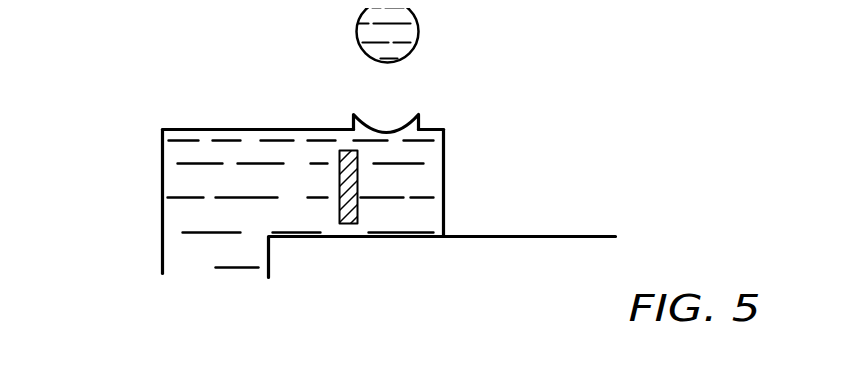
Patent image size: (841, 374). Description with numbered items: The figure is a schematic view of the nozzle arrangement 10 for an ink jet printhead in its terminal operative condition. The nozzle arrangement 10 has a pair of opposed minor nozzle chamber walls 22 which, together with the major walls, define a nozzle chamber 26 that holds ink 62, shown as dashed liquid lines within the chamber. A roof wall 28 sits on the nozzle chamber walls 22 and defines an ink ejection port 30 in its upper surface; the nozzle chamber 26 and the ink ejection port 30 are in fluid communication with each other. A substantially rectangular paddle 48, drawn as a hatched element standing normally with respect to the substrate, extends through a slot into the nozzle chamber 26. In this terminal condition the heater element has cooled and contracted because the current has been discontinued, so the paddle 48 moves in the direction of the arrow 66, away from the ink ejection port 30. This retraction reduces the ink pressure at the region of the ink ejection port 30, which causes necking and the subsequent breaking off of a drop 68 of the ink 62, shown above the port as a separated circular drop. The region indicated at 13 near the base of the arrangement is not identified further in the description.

The nozzle arrangement 10 is at (552, 108).
The base 13 is at (207, 246).
The minor nozzle chamber walls 22 is at (160, 222).
The nozzle chamber 26 is at (245, 151).
The roof wall 28 is at (180, 129).
The ink ejection port 30 is at (390, 124).
The paddle 48 is at (357, 208).
The ink 62 is at (188, 187).
The arrow 66 is at (321, 182).
The drop 68 is at (363, 30).